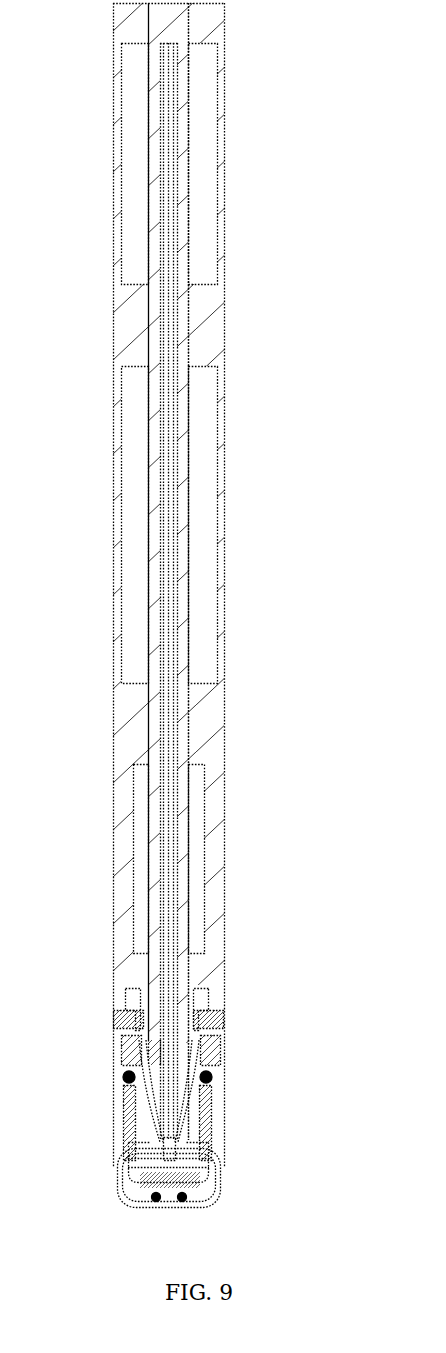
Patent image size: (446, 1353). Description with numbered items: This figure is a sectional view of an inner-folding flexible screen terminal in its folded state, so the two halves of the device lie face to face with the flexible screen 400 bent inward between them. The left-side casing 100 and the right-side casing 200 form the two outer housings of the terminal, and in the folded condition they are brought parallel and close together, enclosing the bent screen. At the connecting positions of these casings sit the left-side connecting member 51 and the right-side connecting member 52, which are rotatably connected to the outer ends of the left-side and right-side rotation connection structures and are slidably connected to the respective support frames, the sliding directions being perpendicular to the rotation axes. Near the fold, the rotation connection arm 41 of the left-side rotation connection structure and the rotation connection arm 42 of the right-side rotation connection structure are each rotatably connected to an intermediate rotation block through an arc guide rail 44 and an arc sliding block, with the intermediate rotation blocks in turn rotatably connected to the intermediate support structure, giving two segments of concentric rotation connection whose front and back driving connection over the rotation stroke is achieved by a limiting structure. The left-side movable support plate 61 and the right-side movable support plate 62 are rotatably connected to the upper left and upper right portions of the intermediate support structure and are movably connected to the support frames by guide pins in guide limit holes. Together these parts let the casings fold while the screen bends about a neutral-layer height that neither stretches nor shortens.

The left-side casing 100 is at (138, 585).
The right-side casing 200 is at (249, 571).
The left-side connecting member 51 is at (108, 1014).
The right-side connecting member 52 is at (230, 991).
The left-side movable support plate 61 is at (105, 1076).
The right-side movable support plate 62 is at (232, 1060).
The flexible screen 400 is at (198, 1100).
The rotation connection arm 41 is at (123, 1163).
The rotation connection arm 42 is at (216, 1163).
The arc guide rail 44 is at (177, 1192).